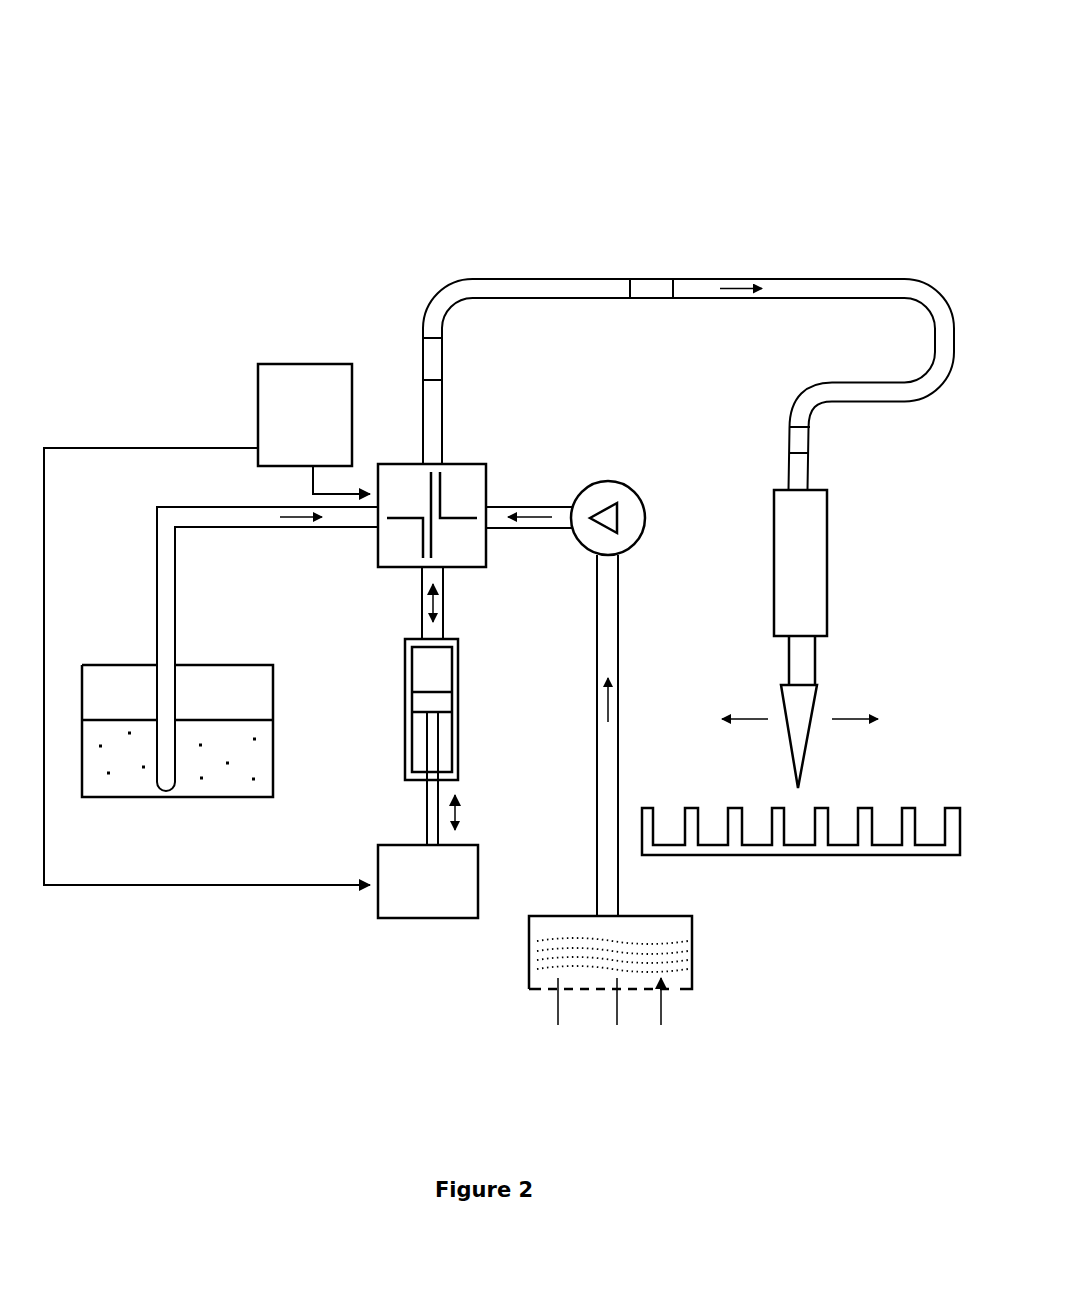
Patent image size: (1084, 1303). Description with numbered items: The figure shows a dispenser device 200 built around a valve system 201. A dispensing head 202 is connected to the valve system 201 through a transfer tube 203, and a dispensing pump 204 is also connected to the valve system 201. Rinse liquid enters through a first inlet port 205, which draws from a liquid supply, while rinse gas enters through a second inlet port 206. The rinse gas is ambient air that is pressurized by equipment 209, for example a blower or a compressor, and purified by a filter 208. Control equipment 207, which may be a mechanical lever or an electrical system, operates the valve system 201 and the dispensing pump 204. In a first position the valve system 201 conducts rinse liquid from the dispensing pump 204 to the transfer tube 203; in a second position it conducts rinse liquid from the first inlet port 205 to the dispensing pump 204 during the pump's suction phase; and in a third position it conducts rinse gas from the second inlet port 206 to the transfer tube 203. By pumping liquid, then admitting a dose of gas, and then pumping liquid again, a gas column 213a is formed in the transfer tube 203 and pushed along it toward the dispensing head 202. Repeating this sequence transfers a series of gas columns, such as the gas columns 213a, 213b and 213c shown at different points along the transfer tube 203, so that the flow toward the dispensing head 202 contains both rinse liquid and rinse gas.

The dispenser device 200 is at (268, 158).
The valve system 201 is at (460, 464).
The dispensing head 202 is at (828, 577).
The transfer tube 203 is at (834, 280).
The dispensing pump 204 is at (460, 703).
The first inlet port 205 is at (367, 528).
The second inlet port 206 is at (490, 530).
The control equipment 207 is at (207, 624).
The filter 208 is at (529, 939).
The equipment for pressurizing the rinse gas 209 is at (650, 520).
The gas column 213a is at (803, 440).
The gas column 213b is at (650, 288).
The gas column 213c is at (432, 350).